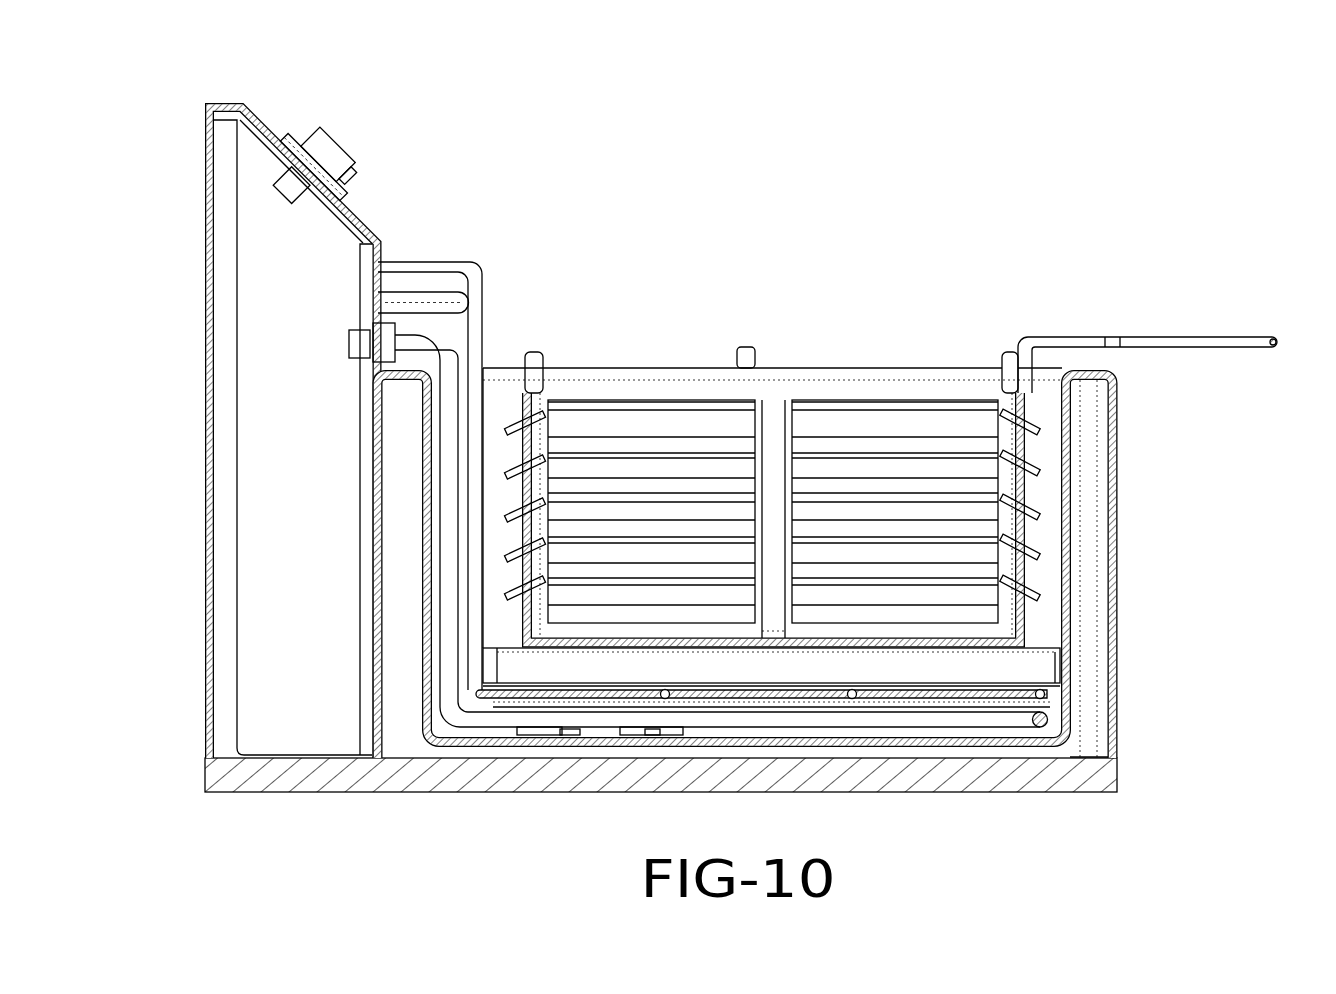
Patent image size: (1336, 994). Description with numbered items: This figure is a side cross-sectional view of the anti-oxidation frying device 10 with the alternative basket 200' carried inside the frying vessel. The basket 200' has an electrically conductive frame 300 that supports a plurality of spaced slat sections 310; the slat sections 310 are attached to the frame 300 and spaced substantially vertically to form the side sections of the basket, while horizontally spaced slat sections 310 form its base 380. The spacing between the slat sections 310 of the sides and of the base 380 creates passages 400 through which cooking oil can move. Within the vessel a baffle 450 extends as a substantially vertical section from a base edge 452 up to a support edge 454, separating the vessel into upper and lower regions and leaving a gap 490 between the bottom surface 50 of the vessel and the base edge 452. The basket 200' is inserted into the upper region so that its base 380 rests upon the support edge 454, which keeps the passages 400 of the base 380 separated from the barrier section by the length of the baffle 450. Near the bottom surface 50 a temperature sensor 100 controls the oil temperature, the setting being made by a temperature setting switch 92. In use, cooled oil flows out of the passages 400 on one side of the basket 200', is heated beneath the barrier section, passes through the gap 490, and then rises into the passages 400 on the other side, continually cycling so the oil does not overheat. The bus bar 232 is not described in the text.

The anti-oxidation frying device 10 is at (1093, 165).
The bottom surface 50 is at (890, 735).
The temperature setting switch 92 is at (325, 147).
The temperature sensor 100 is at (567, 728).
The basket 200' is at (992, 323).
The bus bar 232 is at (1195, 340).
The electrically conductive frame 300 is at (1013, 643).
The slat sections 310 is at (582, 507).
The base 380 is at (600, 779).
The passages 400 is at (698, 490).
The baffle 450 is at (980, 665).
The base edge 452 is at (515, 690).
The support edge 454 is at (515, 635).
The gap 490 is at (760, 730).